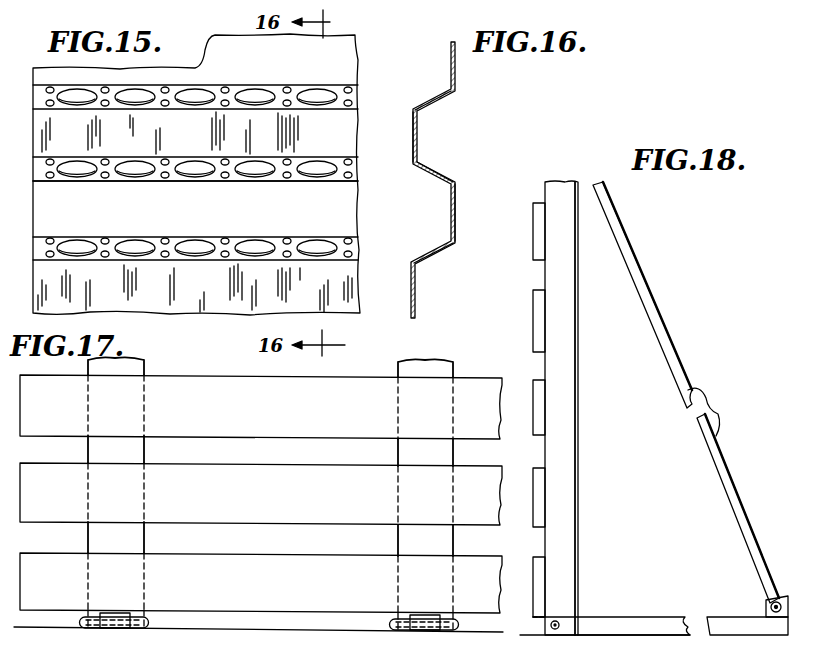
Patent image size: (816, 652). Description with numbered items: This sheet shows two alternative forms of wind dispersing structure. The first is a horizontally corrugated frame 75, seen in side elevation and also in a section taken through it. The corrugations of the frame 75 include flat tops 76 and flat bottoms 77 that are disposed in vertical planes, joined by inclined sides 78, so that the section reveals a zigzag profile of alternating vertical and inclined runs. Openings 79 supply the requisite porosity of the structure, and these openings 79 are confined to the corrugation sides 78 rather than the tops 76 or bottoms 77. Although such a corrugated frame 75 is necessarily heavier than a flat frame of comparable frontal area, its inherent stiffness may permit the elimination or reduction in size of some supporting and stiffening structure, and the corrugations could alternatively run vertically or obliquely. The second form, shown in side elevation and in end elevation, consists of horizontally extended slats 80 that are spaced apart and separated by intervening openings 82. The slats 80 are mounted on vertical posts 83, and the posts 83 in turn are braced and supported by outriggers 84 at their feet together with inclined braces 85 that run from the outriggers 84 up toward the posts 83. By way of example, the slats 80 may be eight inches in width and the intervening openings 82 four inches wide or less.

In FIG. 15, the horizontally corrugated frame 75 is at (220, 174).
In FIG. 16, the horizontally corrugated frame 75 is at (449, 62).
In FIG. 15, the flat tops 76 is at (338, 146).
In FIG. 16, the flat tops 76 is at (414, 147).
In FIG. 15, the flat bottoms 77 is at (286, 226).
In FIG. 16, the flat bottoms 77 is at (456, 218).
In FIG. 15, the inclined sides 78 is at (340, 187).
In FIG. 16, the inclined sides 78 is at (448, 93).
In FIG. 15, the openings 79 is at (104, 162).
In FIG. 16, the openings 79 is at (438, 257).
In FIG. 17, the horizontally extended slats 80 is at (222, 377).
In FIG. 18, the horizontally extended slats 80 is at (534, 323).
In FIG. 17, the intervening openings 82 is at (340, 445).
In FIG. 18, the intervening openings 82 is at (542, 281).
In FIG. 17, the vertical posts 83 is at (148, 452).
In FIG. 18, the vertical posts 83 is at (578, 445).
In FIG. 18, the outriggers 84 is at (617, 618).
In FIG. 18, the inclined braces 85 is at (720, 437).